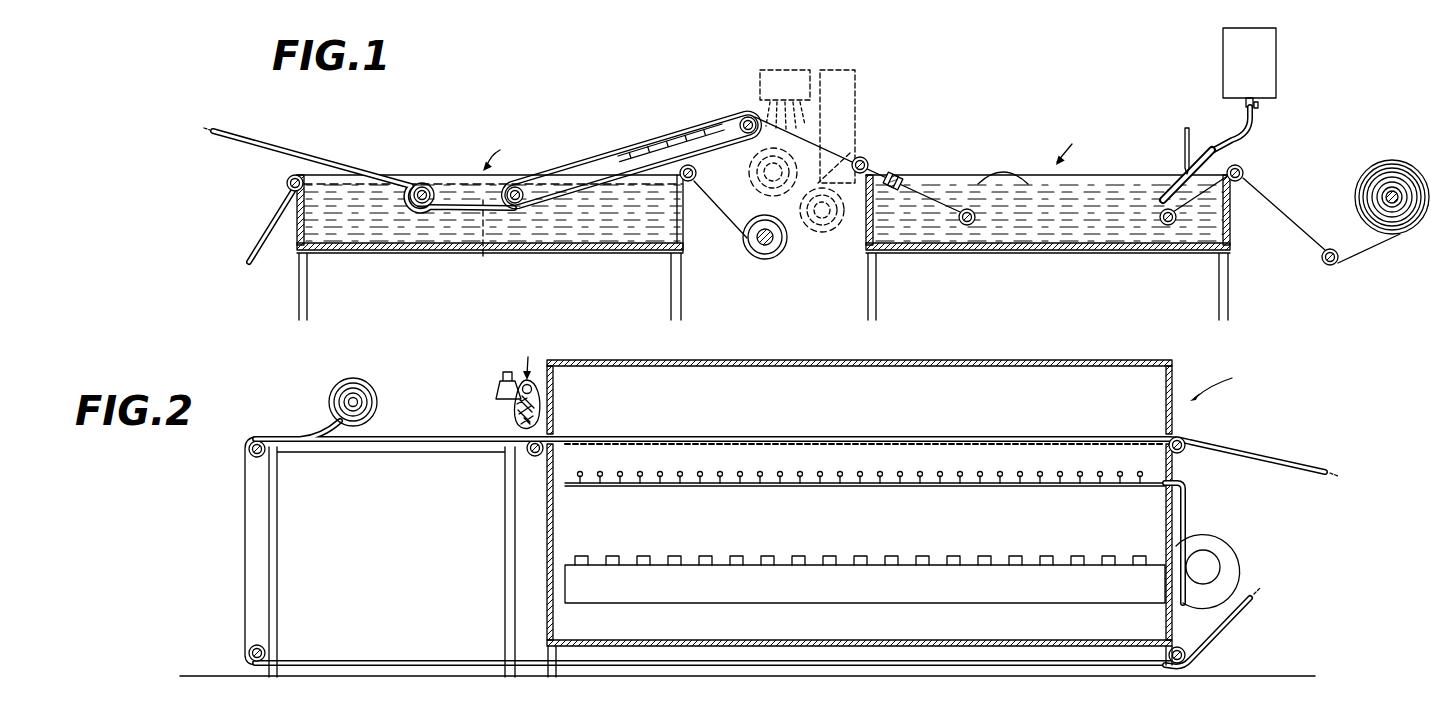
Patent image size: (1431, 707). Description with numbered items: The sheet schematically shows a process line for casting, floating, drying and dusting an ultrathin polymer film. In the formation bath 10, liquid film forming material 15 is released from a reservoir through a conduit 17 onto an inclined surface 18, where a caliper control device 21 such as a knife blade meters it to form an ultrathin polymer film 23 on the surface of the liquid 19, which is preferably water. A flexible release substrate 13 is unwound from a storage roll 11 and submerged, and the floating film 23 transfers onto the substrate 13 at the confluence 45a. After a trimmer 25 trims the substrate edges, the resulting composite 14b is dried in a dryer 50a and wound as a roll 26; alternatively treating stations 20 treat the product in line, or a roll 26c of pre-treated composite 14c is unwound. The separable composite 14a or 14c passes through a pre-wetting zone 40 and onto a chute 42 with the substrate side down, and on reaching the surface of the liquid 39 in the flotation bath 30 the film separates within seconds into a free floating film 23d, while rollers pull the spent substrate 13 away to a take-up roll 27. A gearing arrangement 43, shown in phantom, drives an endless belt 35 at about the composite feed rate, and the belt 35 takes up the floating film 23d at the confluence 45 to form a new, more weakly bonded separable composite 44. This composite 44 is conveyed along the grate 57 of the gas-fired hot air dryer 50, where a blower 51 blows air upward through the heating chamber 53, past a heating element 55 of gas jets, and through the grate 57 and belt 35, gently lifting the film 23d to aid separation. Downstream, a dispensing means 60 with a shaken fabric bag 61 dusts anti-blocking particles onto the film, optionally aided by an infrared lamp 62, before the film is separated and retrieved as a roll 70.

In FIG. 1, the formation bath 10 is at (1075, 143).
In FIG. 1, the storage roll 11 is at (1402, 170).
In FIG. 1, the release substrate 13 is at (720, 222).
In FIG. 1, the separable composite 14a is at (838, 138).
In FIG. 1, the composite 14b is at (852, 142).
In FIG. 1, the pre-treated composite 14c is at (752, 172).
In FIG. 1, the liquid film forming material 15 is at (1262, 76).
In FIG. 1, the conduit 17 is at (1256, 128).
In FIG. 1, the inclined surface 18 is at (1217, 157).
In FIG. 1, the liquid 19 is at (1195, 237).
In FIG. 1, the treating stations 20 is at (782, 67).
In FIG. 1, the caliper control device 21 is at (1192, 122).
In FIG. 1, the ultrathin polymer film 23 is at (1003, 164).
In FIG. 1, the floating film 23d is at (493, 184).
In FIG. 2, the floating film 23d is at (410, 436).
In FIG. 1, the trimmer 25 is at (900, 176).
In FIG. 1, the roll 26 is at (828, 238).
In FIG. 1, the roll of pre-treated composite 26c is at (748, 176).
In FIG. 1, the take-up roll 27 is at (762, 258).
In FIG. 1, the flotation bath 30 is at (500, 149).
In FIG. 1, the endless belt 35 is at (250, 254).
In FIG. 2, the endless belt 35 is at (246, 532).
In FIG. 1, the liquid 39 is at (603, 237).
In FIG. 1, the pre-wetting zone 40 is at (660, 150).
In FIG. 1, the chute 42 is at (603, 156).
In FIG. 1, the gearing arrangement 43 is at (472, 243).
In FIG. 1, the separable composite 44 is at (238, 133).
In FIG. 2, the separable composite 44 is at (733, 437).
In FIG. 1, the confluence 45 is at (427, 184).
In FIG. 1, the confluence 45a is at (912, 184).
In FIG. 2, the dryer 50 is at (902, 517).
In FIG. 1, the dryer 50a is at (857, 70).
In FIG. 2, the blower 51 is at (848, 600).
In FIG. 2, the heating chamber 53 is at (912, 469).
In FIG. 2, the heating element 55 is at (779, 487).
In FIG. 2, the grate 57 is at (845, 478).
In FIG. 2, the dispensing means 60 is at (534, 356).
In FIG. 2, the fabric bag 61 is at (544, 406).
In FIG. 2, the infrared lamp 62 is at (497, 388).
In FIG. 2, the retrieved ultrathin film roll 70 is at (368, 380).